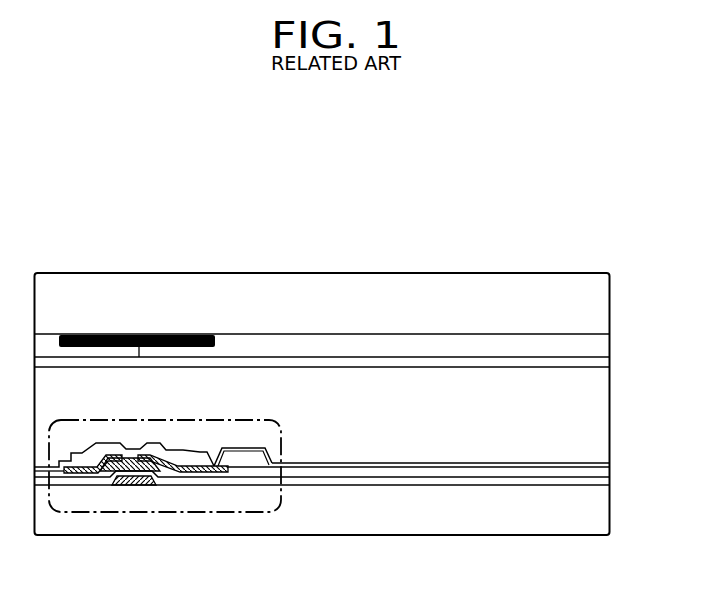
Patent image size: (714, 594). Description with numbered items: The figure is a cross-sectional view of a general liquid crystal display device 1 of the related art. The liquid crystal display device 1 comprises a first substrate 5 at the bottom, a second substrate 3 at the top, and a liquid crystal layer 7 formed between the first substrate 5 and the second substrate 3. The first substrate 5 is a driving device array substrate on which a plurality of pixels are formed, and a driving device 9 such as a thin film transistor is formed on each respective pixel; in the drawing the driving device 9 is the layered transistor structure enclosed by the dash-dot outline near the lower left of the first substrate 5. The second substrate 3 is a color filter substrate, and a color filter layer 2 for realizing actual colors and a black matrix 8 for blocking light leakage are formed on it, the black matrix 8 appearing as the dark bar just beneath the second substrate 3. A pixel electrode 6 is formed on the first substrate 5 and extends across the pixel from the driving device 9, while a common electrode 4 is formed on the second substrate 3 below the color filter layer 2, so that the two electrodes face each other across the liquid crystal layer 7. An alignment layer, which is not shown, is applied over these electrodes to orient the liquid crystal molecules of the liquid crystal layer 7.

The liquid crystal display device 1 is at (606, 264).
The color filter layer 2 is at (603, 340).
The second substrate 3 is at (603, 302).
The common electrode 4 is at (603, 362).
The first substrate 5 is at (603, 515).
The pixel electrode 6 is at (603, 463).
The liquid crystal layer 7 is at (603, 420).
The black matrix 8 is at (158, 335).
The driving device 9 is at (165, 512).